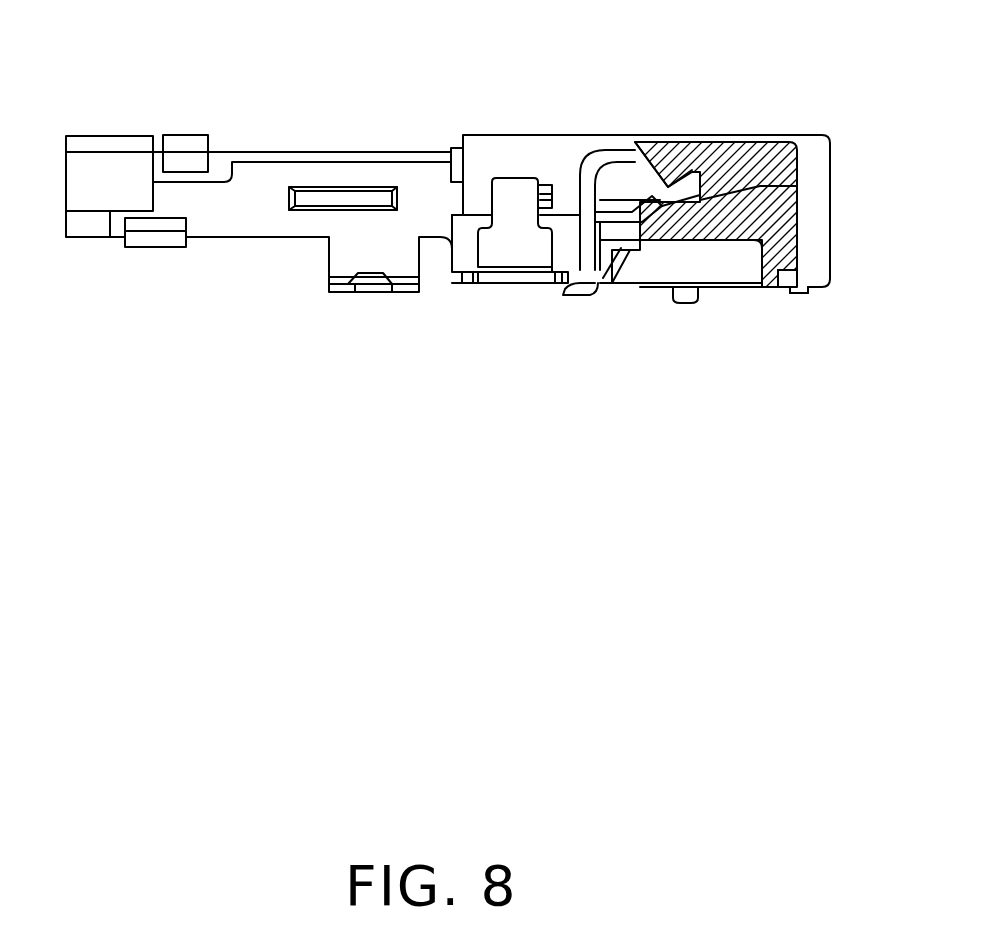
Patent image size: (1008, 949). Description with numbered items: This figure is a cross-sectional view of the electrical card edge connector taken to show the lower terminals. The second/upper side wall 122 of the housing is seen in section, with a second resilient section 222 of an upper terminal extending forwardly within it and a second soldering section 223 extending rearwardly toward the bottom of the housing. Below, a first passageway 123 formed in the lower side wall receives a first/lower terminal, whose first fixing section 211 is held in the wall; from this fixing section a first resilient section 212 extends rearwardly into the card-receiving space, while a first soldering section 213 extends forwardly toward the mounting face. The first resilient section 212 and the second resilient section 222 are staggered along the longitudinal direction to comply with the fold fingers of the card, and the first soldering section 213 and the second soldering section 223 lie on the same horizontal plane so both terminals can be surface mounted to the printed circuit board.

The second resilient section 222 is at (647, 140).
The second/upper side wall 122 is at (695, 148).
The first resilient section 212 is at (738, 178).
The first fixing section 211 is at (583, 247).
The first soldering section 213 is at (567, 290).
The first passageway 123 is at (617, 278).
The second soldering section 223 is at (803, 295).